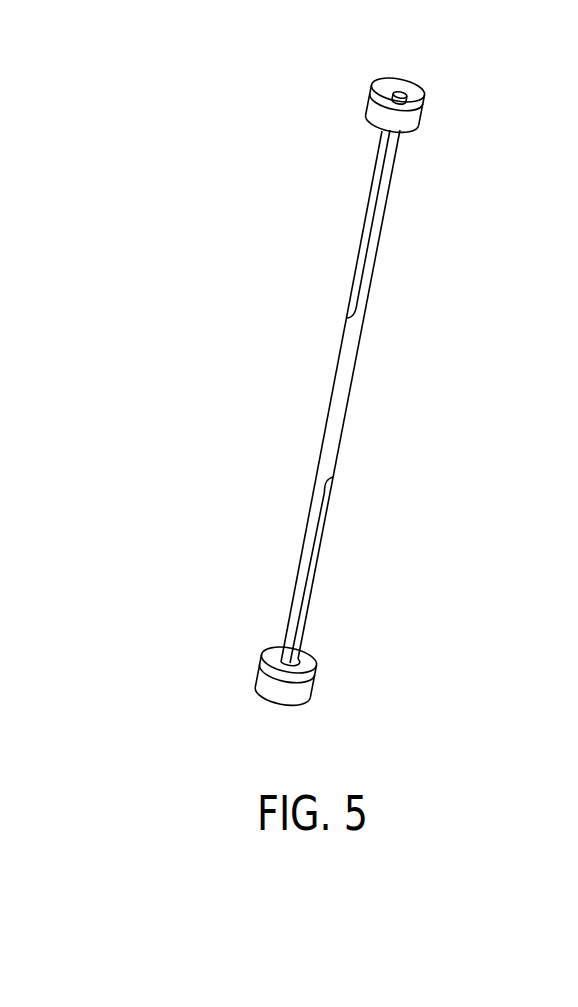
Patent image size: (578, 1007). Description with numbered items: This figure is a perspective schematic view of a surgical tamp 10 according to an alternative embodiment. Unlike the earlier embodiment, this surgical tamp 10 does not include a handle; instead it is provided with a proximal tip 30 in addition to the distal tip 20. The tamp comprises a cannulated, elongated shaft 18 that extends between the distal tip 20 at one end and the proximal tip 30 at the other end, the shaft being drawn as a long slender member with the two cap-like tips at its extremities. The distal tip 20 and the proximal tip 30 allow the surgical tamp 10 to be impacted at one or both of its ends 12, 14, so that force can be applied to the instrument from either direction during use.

The surgical tamp 10 is at (105, 226).
The end 12 is at (487, 110).
The end 14 is at (398, 703).
The elongated shaft 18 is at (347, 427).
The distal tip 20 is at (252, 685).
The proximal tip 30 is at (383, 87).